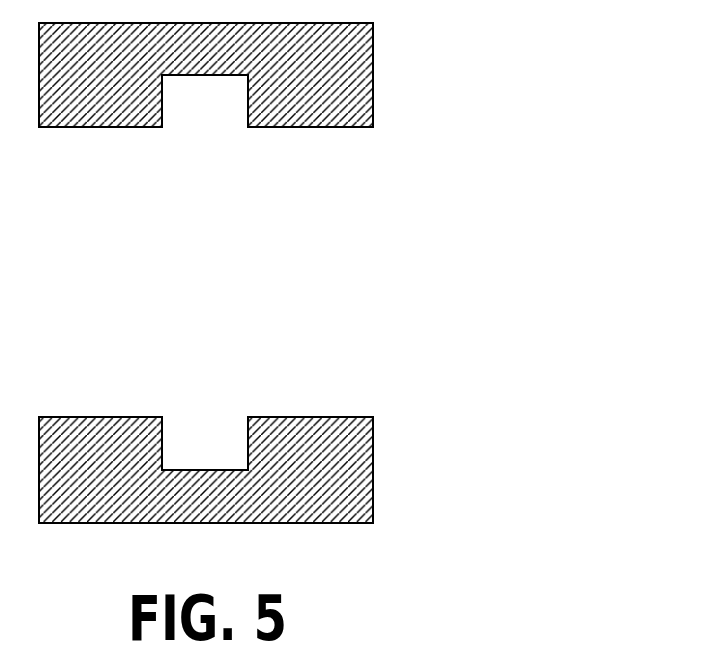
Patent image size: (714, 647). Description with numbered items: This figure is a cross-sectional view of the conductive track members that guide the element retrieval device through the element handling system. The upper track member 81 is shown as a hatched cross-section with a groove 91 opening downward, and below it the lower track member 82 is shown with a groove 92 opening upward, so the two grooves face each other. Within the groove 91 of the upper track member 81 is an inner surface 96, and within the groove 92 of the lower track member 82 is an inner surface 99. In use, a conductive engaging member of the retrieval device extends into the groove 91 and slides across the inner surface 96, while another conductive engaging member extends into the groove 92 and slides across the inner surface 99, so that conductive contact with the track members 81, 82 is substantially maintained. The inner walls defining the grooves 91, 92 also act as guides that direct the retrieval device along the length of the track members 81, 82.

The upper track member 81 is at (373, 71).
The lower track member 82 is at (373, 468).
The inner surface 96 is at (170, 76).
The inner surface 99 is at (164, 469).
The groove 91 is at (189, 136).
The groove 92 is at (195, 407).